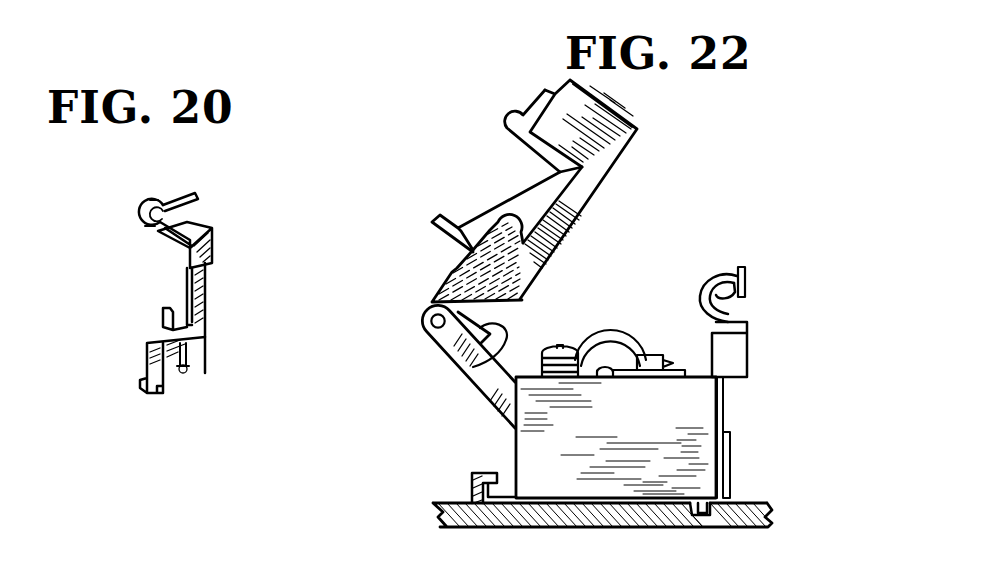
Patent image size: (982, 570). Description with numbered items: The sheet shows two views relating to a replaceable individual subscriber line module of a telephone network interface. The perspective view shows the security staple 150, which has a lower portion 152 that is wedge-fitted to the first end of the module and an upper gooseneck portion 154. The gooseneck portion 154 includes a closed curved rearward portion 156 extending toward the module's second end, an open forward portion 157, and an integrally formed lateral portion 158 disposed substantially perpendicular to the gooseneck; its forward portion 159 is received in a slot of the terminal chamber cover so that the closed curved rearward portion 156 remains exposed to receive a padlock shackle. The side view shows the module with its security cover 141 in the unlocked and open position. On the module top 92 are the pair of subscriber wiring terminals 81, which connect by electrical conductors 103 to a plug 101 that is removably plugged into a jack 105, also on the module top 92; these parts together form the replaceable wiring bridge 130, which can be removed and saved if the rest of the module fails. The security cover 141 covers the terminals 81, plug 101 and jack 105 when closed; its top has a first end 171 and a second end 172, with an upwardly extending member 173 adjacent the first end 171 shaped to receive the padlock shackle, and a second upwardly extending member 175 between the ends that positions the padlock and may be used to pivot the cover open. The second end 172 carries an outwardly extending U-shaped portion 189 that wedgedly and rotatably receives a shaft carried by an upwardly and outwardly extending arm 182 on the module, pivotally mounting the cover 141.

In FIG. 22, the subscriber wiring terminals 81 is at (562, 347).
In FIG. 22, the module top 92 is at (697, 377).
In FIG. 22, the plug 101 is at (666, 370).
In FIG. 22, the electrical conductors 103 is at (598, 372).
In FIG. 22, the jack 105 is at (598, 372).
In FIG. 22, the replaceable wiring bridge plug/cable 130 is at (616, 308).
In FIG. 22, the security cover 141 is at (602, 187).
In FIG. 20, the security staple 150 is at (202, 303).
In FIG. 22, the security staple 150 is at (723, 410).
In FIG. 20, the lower portion 152 is at (195, 352).
In FIG. 20, the upper gooseneck portion 154 is at (143, 230).
In FIG. 22, the upper gooseneck portion 154 is at (752, 318).
In FIG. 20, the closed curved rearward portion 156 is at (142, 201).
In FIG. 22, the closed curved rearward portion 156 is at (708, 272).
In FIG. 20, the open forward portion 157 is at (185, 223).
In FIG. 22, the open forward portion 157 is at (723, 300).
In FIG. 20, the lateral portion 158 is at (197, 193).
In FIG. 22, the lateral portion 158 is at (748, 270).
In FIG. 20, the forward portion 159 is at (183, 168).
In FIG. 22, the first end 171 is at (635, 122).
In FIG. 22, the second end 172 is at (394, 322).
In FIG. 22, the upwardly extending member 173 is at (520, 112).
In FIG. 22, the upwardly extending second member 175 is at (436, 219).
In FIG. 22, the arm 182 is at (492, 395).
In FIG. 22, the U-shaped portion 189 is at (468, 368).